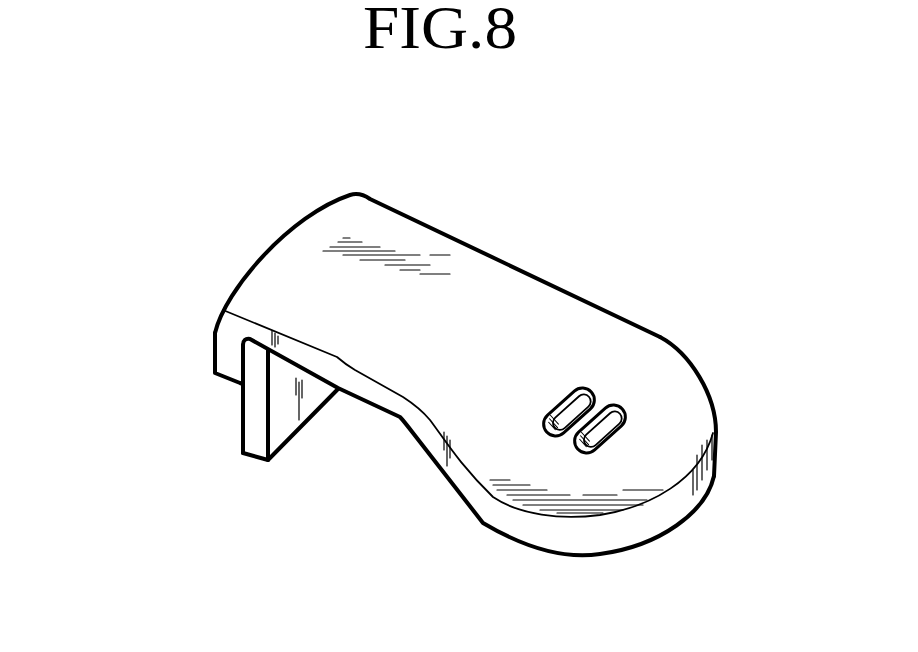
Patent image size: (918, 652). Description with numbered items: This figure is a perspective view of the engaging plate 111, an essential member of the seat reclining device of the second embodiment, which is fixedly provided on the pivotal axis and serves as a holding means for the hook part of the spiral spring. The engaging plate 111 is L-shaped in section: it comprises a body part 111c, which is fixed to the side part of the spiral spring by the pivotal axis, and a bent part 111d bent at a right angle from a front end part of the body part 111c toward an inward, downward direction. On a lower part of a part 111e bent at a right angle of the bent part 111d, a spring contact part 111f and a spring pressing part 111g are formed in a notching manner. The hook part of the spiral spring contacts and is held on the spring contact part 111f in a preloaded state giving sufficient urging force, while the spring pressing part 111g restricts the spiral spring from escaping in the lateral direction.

The engaging plate 111 is at (473, 240).
The body part 111c is at (623, 347).
The bent part 111d is at (286, 430).
The part bent at a right angle 111e is at (227, 362).
The spring contact part 111f is at (255, 455).
The spring pressing part 111g is at (258, 370).